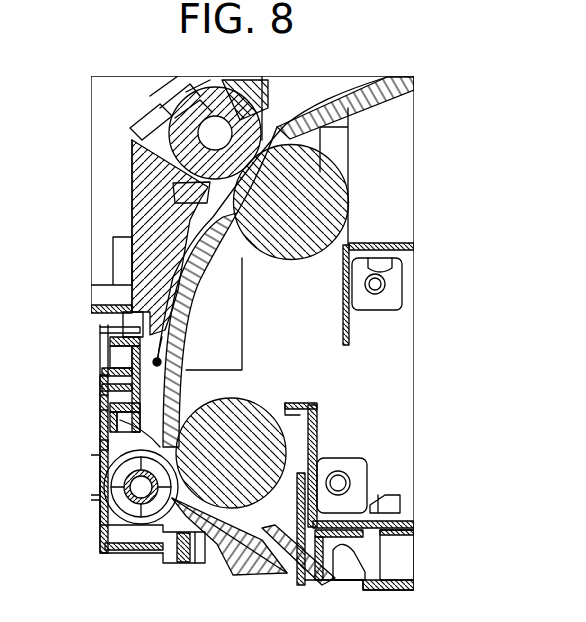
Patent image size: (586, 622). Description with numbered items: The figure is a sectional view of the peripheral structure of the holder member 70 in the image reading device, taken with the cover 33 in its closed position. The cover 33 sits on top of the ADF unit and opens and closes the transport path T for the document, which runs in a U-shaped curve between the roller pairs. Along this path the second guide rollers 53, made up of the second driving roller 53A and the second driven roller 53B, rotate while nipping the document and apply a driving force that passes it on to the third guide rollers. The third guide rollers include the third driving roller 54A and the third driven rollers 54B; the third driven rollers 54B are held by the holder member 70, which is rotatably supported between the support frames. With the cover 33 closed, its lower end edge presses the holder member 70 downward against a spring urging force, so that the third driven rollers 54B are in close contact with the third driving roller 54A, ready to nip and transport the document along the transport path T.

The cover 33 is at (131, 183).
The transport path T is at (112, 322).
The holder member 70 is at (100, 405).
The second guide rollers 53 is at (360, 173).
The second driving roller 53A is at (335, 168).
The second driven roller 53B is at (310, 110).
The third driving roller 54A is at (273, 438).
The third driven rollers 54B is at (125, 493).